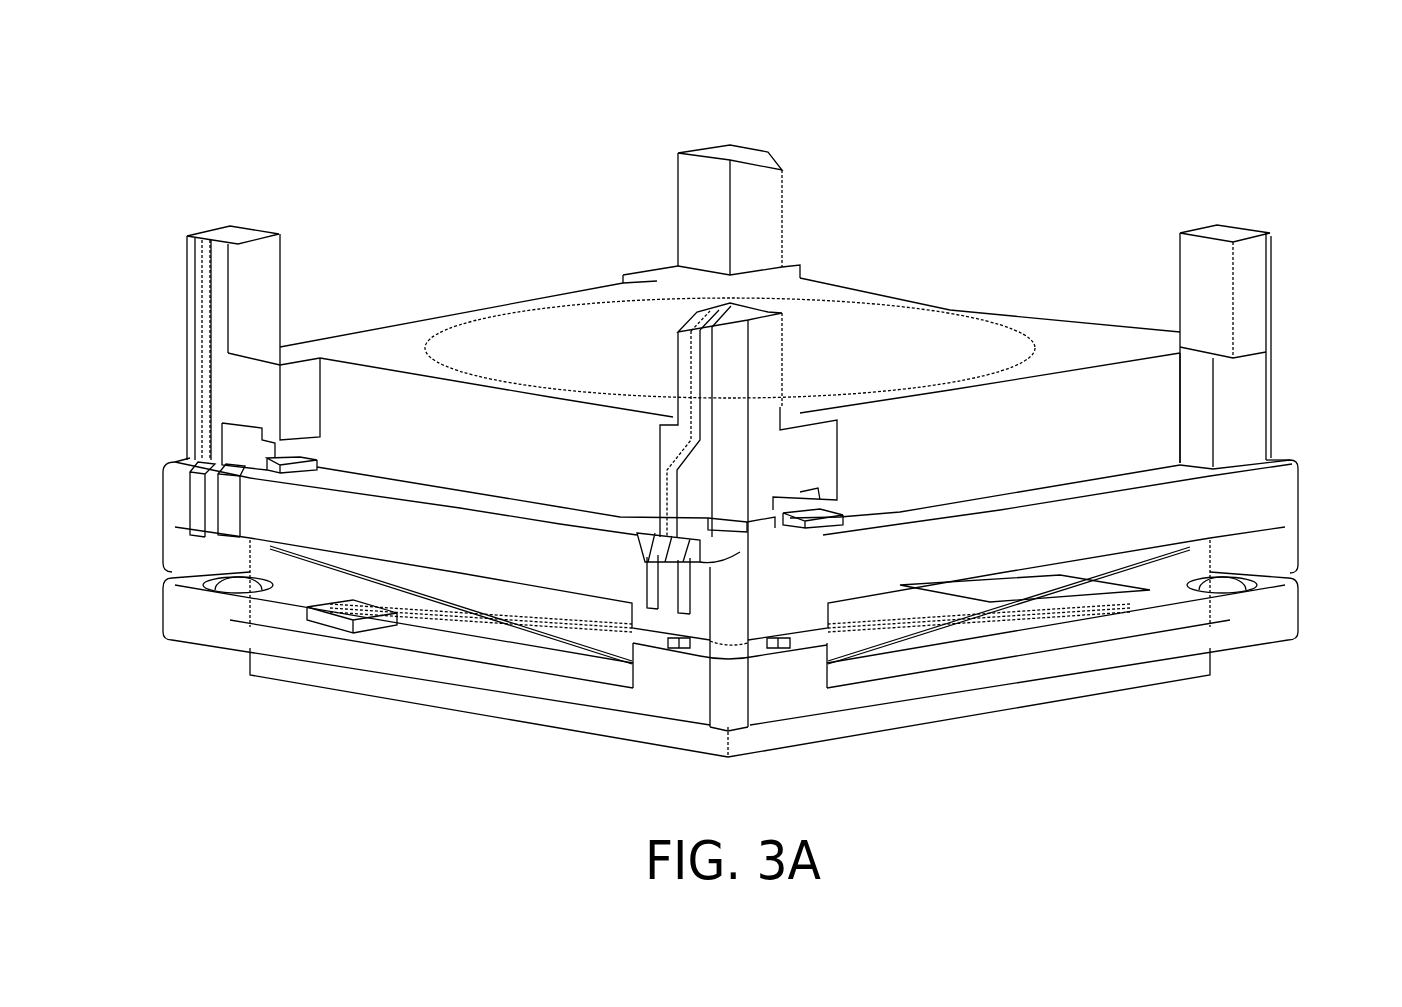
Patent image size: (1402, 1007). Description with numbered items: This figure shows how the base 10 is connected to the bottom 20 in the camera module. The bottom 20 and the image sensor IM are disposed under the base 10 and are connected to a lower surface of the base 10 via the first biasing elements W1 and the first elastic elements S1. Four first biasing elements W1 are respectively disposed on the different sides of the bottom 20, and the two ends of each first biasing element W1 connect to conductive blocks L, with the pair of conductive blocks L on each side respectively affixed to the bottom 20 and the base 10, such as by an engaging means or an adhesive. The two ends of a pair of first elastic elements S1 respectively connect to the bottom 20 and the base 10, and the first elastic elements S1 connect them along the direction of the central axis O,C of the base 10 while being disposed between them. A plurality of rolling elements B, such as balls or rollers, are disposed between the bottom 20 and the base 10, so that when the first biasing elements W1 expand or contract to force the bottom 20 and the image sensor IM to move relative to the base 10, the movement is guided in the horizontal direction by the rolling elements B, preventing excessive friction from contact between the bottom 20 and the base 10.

The base 10 is at (1297, 517).
The bottom 20 is at (1297, 609).
The conductive blocks L is at (245, 548).
The rolling elements B is at (225, 593).
The first elastic elements S1 is at (425, 622).
The first biasing elements W1 is at (560, 635).
The image sensor IM is at (1008, 620).
The central axis O,C is at (730, 808).